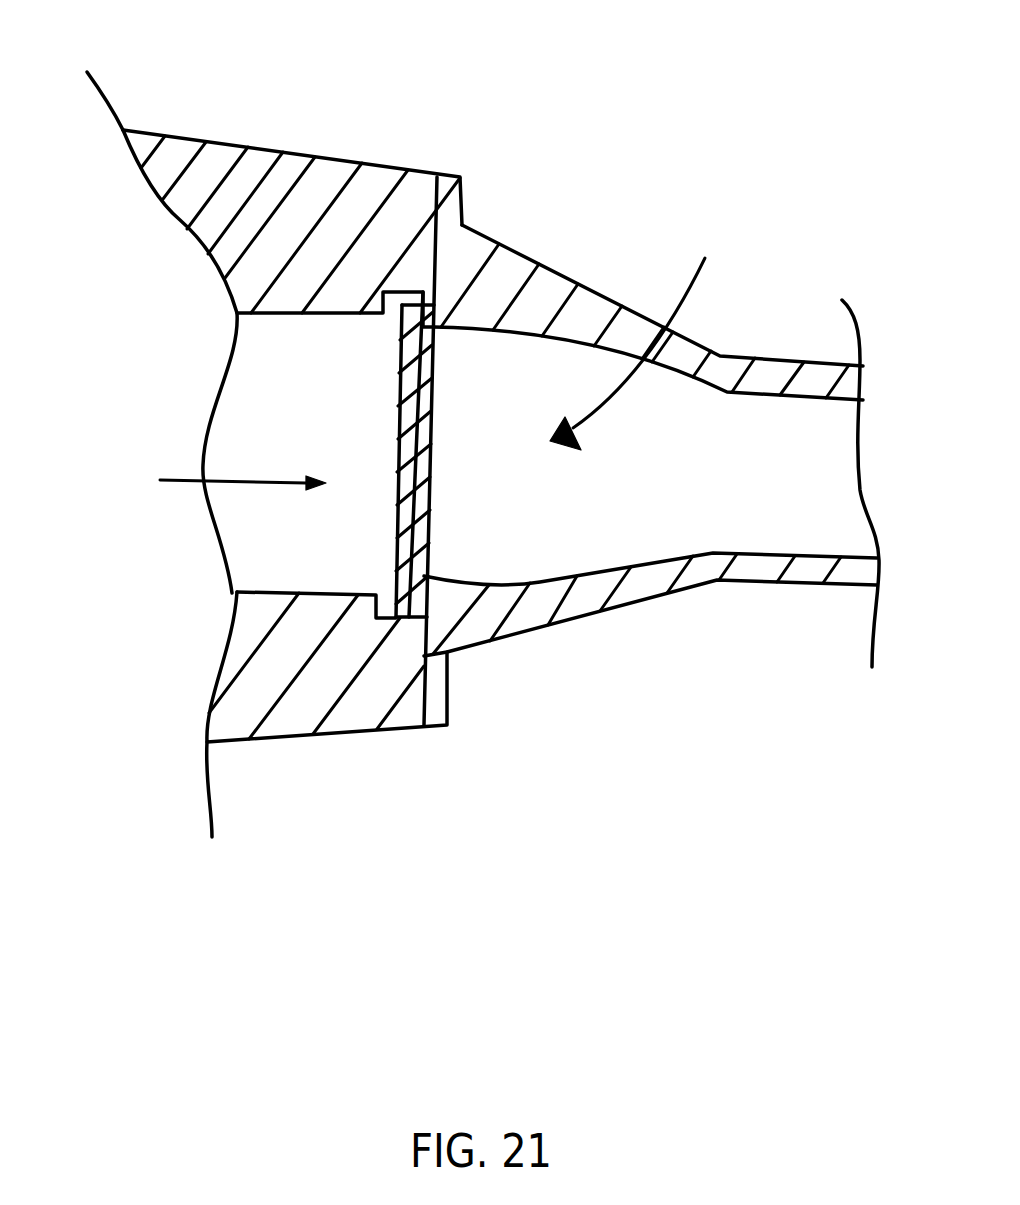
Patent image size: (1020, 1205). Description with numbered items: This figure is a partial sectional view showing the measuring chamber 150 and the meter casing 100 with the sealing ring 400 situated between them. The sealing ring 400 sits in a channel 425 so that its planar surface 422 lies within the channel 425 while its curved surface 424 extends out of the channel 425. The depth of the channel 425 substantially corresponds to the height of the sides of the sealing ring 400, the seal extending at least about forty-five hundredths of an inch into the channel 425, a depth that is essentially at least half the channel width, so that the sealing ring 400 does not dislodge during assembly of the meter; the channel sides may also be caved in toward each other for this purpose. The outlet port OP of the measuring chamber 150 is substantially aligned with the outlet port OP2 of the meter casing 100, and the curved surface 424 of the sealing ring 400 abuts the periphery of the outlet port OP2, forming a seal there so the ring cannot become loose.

The meter casing 100 is at (633, 601).
The measuring chamber 150 is at (285, 343).
The sealing ring 400 is at (471, 418).
The planar surface 422 is at (395, 432).
The curved surface 424 is at (433, 478).
The channel 425 is at (423, 533).
The outlet port OP is at (197, 491).
The outlet port OP2 is at (675, 320).